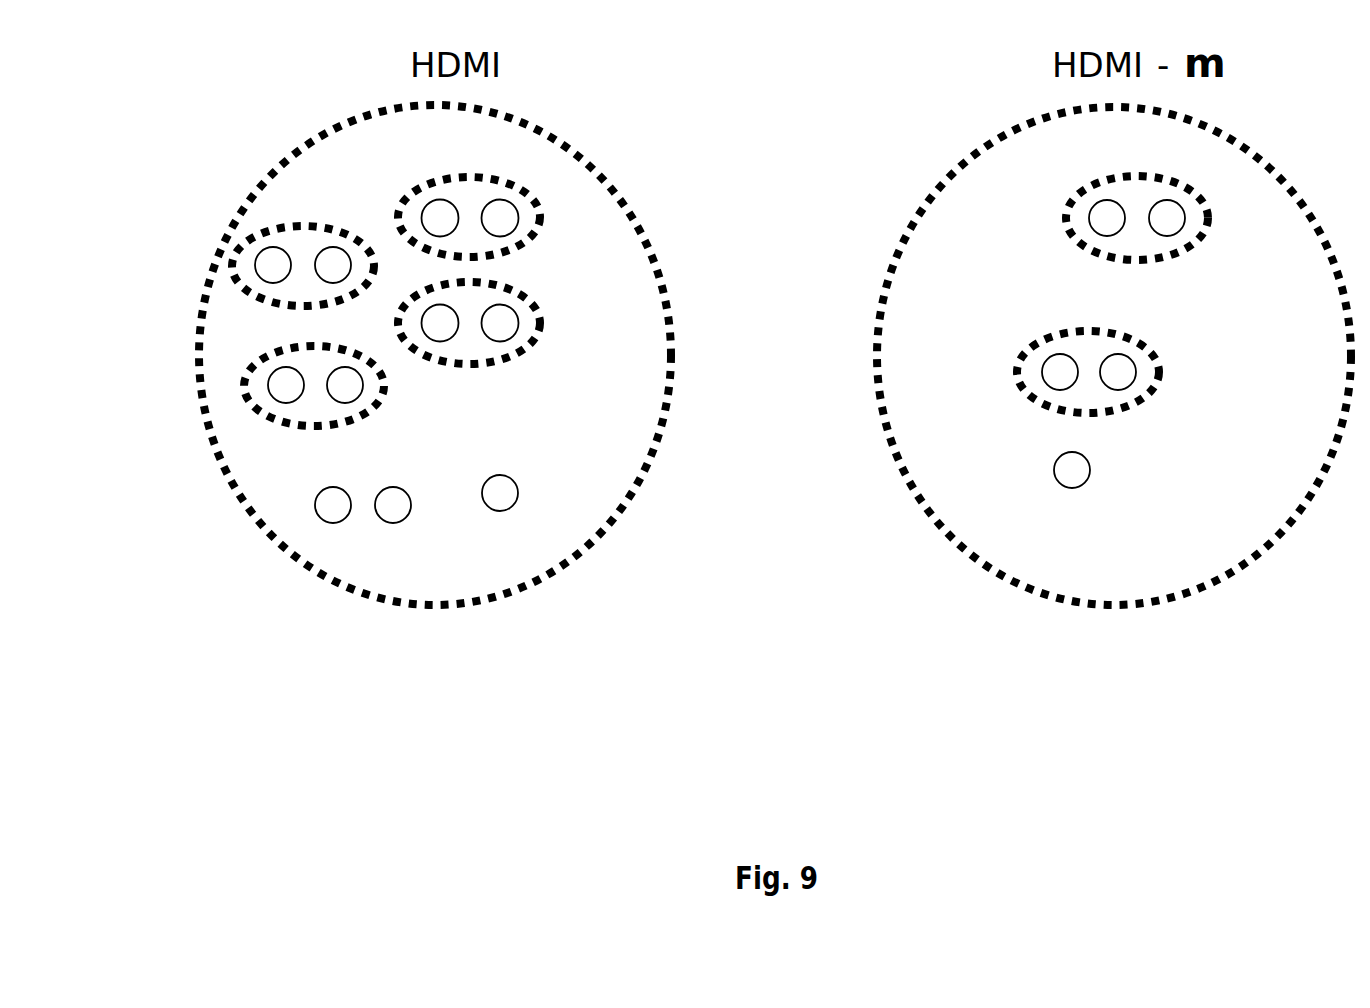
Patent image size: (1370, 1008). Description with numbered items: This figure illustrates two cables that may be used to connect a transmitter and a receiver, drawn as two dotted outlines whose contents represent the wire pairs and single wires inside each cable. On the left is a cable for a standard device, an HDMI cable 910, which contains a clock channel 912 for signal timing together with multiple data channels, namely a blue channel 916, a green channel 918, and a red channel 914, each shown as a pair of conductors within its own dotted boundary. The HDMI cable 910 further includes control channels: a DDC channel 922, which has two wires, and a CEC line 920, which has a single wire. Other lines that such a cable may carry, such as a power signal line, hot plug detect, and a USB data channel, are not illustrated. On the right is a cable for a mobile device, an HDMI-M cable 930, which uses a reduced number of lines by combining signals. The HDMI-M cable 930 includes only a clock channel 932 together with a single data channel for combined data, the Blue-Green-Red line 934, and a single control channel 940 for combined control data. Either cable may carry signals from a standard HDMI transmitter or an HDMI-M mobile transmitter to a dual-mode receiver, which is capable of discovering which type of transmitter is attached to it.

The HDMI cable 910 is at (553, 132).
The clock channel 912 is at (540, 228).
The red data channel 914 is at (540, 337).
The blue data channel 916 is at (232, 249).
The green data channel 918 is at (255, 384).
The CEC line 920 is at (520, 498).
The DDC channel 922 is at (393, 487).
The HDMI-M cable 930 is at (953, 165).
The clock channel 932 is at (1063, 225).
The Blue-Green-Red line 934 is at (1018, 375).
The control channel 940 is at (1055, 462).